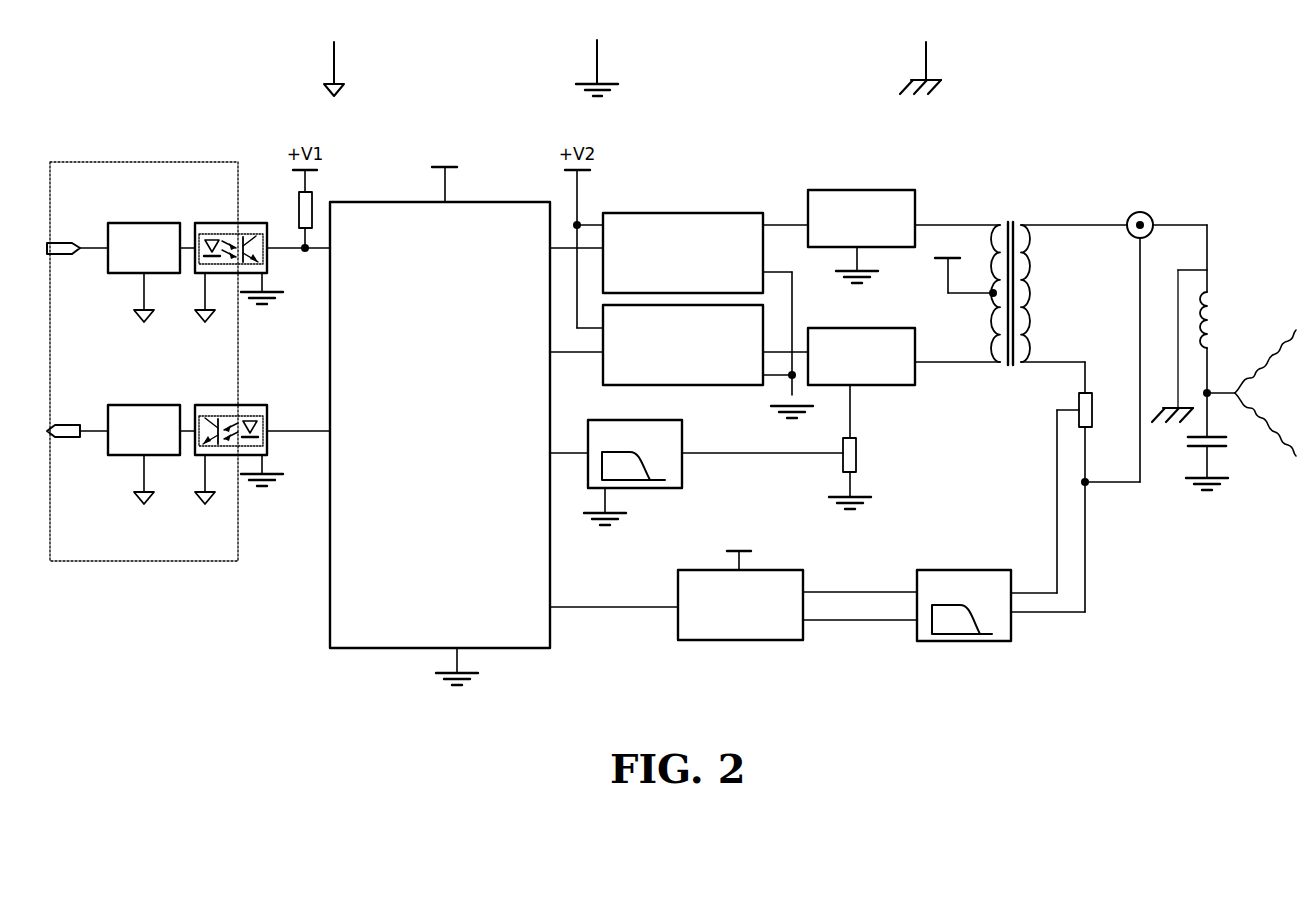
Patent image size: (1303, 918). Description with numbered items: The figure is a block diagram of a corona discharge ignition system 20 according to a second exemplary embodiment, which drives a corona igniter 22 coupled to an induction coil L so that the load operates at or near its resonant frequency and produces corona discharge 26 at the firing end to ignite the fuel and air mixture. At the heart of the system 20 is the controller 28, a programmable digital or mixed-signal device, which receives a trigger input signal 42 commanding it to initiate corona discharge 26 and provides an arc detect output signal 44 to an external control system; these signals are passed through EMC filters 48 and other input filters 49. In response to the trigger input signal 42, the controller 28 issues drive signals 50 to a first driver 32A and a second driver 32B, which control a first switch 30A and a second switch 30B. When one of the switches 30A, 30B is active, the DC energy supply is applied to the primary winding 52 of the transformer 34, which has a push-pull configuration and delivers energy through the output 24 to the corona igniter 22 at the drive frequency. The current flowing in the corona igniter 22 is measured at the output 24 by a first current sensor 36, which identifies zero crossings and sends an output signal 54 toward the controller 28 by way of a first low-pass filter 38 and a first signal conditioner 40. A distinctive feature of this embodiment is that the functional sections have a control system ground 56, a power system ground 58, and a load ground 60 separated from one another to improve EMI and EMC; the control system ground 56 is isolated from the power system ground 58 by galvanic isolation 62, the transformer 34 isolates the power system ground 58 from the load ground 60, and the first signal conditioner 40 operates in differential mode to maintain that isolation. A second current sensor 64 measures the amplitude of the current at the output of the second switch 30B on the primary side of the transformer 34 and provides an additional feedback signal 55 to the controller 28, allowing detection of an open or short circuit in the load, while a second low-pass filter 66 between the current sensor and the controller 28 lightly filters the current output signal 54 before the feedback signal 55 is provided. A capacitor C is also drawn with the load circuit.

The corona discharge ignition system 20 is at (1070, 88).
The corona igniter 22 is at (1216, 390).
The output 24 is at (1153, 218).
The corona discharge 26 is at (1287, 345).
The controller 28 is at (500, 201).
The first switch 30A is at (868, 189).
The second switch 30B is at (916, 368).
The first driver 32A is at (685, 212).
The second driver 32B is at (700, 386).
The transformer 34 is at (1000, 222).
The first current sensor 36 is at (1094, 408).
The first low-pass filter 38 is at (1011, 622).
The first signal conditioner 40 is at (803, 628).
The trigger input signal 42 is at (92, 245).
The arc detect output signal 44 is at (92, 428).
The EMC filters 48 is at (144, 222).
The input filters 49 is at (206, 222).
The drive signals 50 is at (565, 245).
The primary winding 52 is at (980, 268).
The output signal 54 is at (607, 608).
The feedback signal 55 is at (755, 455).
The control system ground 56 is at (332, 62).
The power system ground 58 is at (596, 62).
The load ground 60 is at (925, 62).
The galvanic isolation 62 is at (138, 562).
The second current sensor 64 is at (857, 465).
The second low-pass filter 66 is at (683, 478).
The induction coil L is at (1216, 306).
The capacitor C is at (1218, 447).